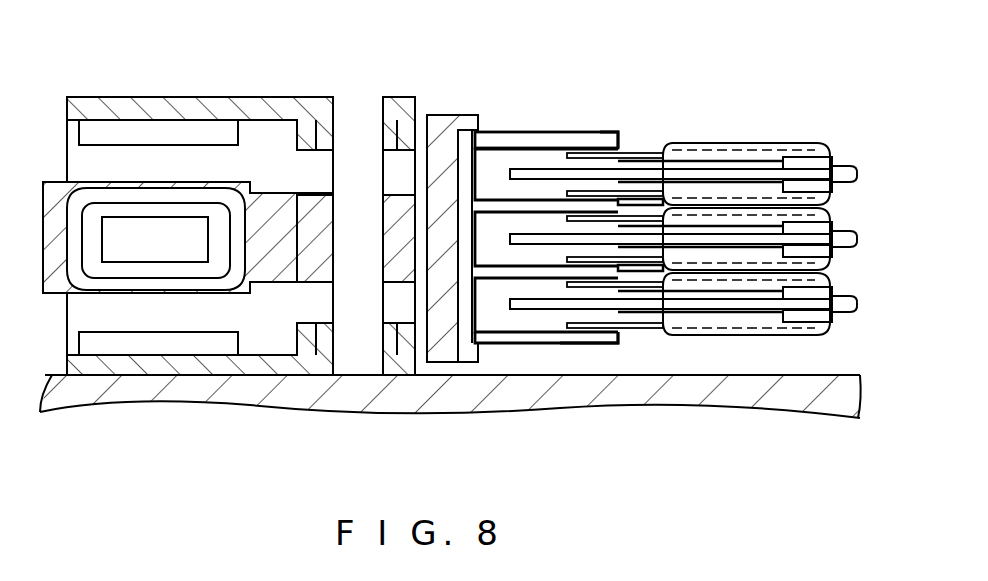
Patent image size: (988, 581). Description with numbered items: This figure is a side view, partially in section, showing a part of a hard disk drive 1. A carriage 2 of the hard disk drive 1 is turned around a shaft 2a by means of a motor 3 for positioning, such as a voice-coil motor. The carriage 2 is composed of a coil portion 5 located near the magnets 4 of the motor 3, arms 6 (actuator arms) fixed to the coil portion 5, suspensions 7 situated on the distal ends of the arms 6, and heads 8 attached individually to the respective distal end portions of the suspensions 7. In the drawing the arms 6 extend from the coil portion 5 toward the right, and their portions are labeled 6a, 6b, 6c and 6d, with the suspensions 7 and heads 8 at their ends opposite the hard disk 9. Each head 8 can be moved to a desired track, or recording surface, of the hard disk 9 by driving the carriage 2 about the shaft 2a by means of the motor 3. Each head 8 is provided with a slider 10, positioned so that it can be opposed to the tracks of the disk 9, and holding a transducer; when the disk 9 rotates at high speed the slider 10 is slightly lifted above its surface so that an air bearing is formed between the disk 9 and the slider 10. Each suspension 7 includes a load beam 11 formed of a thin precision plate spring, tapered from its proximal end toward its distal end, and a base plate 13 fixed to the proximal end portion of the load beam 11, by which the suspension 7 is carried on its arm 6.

The hard disk drive 1 is at (688, 72).
The carriage 2 is at (480, 113).
The shaft 2a is at (362, 113).
The motor 3 is at (268, 97).
The magnets 4 is at (136, 130).
The coil portion 5 is at (248, 193).
The arms 6 is at (527, 132).
The housing upper wall 6a is at (617, 132).
The housing partition 6b is at (622, 198).
The housing partition 6c is at (625, 280).
The housing lower wall 6d is at (605, 343).
The suspensions 7 is at (757, 177).
The heads 8 is at (832, 176).
The hard disk 9 is at (545, 168).
The slider 10 is at (805, 163).
The load beam 11 is at (712, 150).
The base plate 13 is at (600, 149).